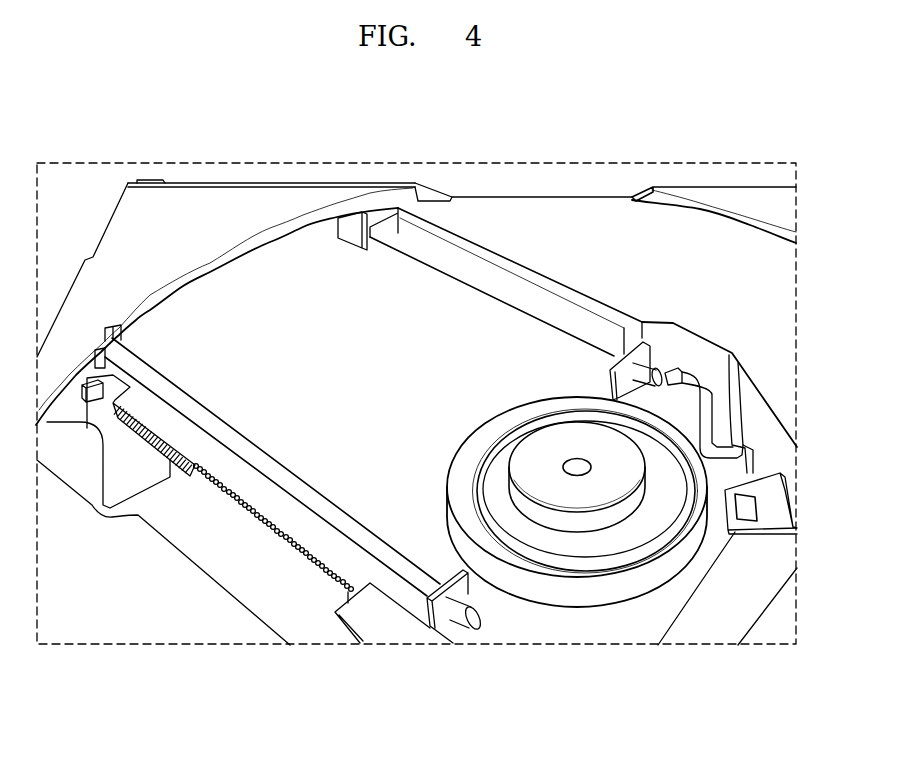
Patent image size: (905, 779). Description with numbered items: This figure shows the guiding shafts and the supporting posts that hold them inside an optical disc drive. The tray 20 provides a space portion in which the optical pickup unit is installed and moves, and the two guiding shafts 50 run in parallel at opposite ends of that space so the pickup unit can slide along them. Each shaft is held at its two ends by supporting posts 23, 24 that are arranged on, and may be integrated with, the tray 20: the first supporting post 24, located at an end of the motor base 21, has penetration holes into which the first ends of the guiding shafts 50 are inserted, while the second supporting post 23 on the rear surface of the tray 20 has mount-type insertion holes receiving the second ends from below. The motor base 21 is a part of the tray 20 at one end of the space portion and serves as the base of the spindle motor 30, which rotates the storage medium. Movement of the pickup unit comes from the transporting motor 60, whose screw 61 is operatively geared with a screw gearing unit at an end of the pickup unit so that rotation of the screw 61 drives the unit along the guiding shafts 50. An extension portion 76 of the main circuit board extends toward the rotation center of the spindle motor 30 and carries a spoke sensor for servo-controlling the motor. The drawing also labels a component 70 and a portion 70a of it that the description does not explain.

The tray 20 is at (247, 193).
The motor base 21 is at (653, 630).
The second supporting post 23 is at (123, 340).
The first supporting post 24 is at (608, 376).
The spindle motor 30 is at (487, 472).
The guiding shafts 50 is at (222, 426).
The transporting motor 60 is at (385, 630).
The screw 61 is at (160, 432).
The arm member 70 is at (732, 423).
The arm foot plate 70a is at (772, 503).
The extension portion 76 is at (743, 494).